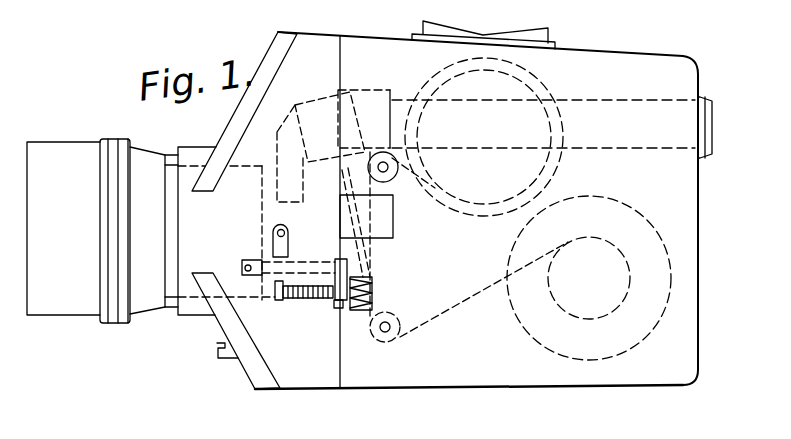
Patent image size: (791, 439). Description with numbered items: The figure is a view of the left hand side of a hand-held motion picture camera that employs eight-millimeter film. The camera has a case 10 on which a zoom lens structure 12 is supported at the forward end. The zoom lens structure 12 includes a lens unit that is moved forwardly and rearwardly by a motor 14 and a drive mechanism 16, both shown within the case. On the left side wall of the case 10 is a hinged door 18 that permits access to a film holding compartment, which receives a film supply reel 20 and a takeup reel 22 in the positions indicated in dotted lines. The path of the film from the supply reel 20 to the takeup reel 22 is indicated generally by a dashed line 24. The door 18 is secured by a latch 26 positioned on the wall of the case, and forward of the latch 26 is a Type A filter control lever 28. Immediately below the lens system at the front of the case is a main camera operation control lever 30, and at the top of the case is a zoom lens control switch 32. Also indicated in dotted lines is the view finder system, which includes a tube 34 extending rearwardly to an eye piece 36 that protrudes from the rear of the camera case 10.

The case 10 is at (303, 390).
The zoom lens structure 12 is at (73, 147).
The motor 14 is at (303, 102).
The drive mechanism 16 is at (302, 303).
The hinged door 18 is at (423, 380).
The film supply reel 20 is at (537, 80).
The takeup reel 22 is at (592, 360).
The dashed line 24 is at (473, 297).
The latch 26 is at (387, 240).
The Type A filter control lever 28 is at (273, 243).
The main camera operation control lever 30 is at (223, 353).
The zoom lens control switch 32 is at (423, 27).
The tube 34 is at (657, 108).
The eye piece 36 is at (715, 98).